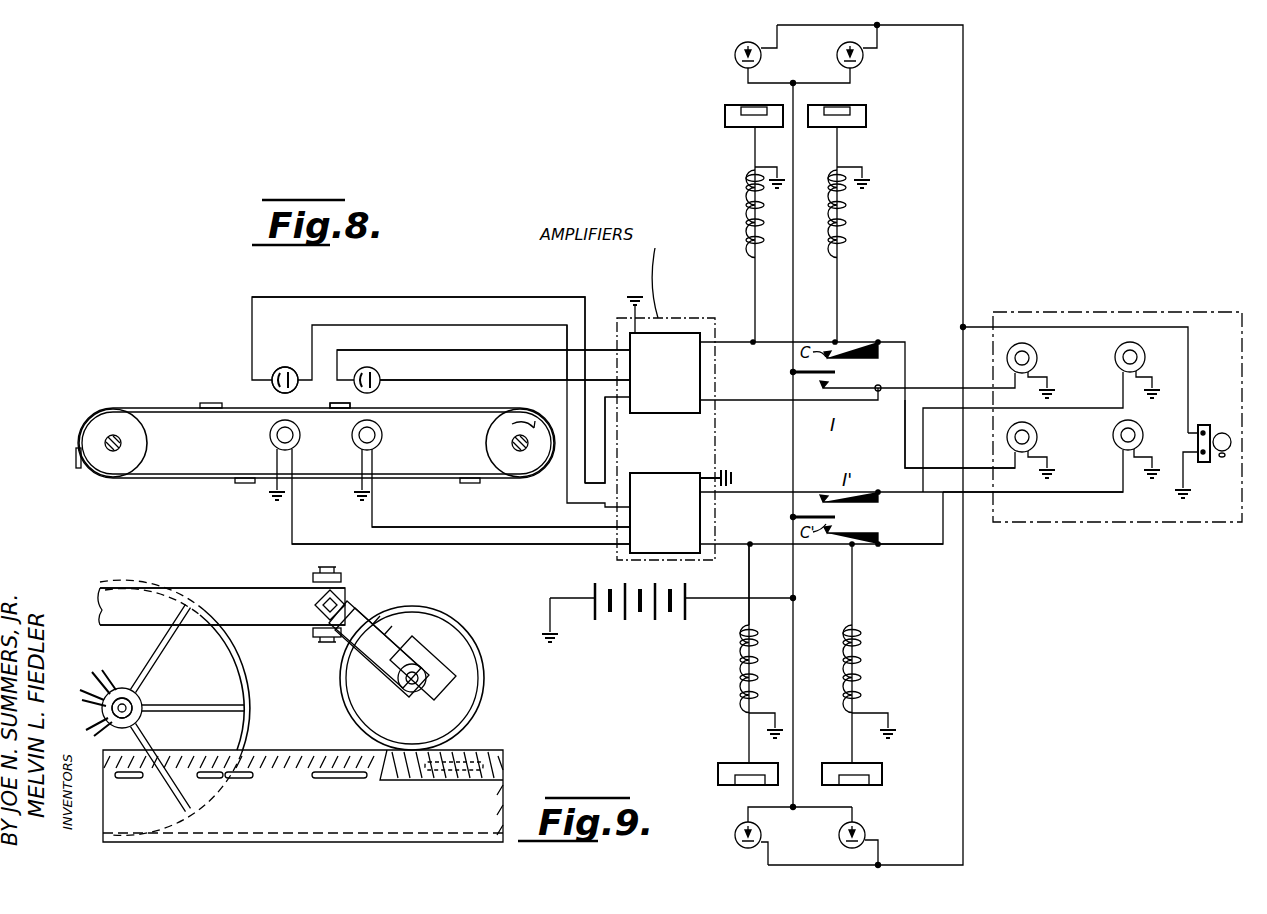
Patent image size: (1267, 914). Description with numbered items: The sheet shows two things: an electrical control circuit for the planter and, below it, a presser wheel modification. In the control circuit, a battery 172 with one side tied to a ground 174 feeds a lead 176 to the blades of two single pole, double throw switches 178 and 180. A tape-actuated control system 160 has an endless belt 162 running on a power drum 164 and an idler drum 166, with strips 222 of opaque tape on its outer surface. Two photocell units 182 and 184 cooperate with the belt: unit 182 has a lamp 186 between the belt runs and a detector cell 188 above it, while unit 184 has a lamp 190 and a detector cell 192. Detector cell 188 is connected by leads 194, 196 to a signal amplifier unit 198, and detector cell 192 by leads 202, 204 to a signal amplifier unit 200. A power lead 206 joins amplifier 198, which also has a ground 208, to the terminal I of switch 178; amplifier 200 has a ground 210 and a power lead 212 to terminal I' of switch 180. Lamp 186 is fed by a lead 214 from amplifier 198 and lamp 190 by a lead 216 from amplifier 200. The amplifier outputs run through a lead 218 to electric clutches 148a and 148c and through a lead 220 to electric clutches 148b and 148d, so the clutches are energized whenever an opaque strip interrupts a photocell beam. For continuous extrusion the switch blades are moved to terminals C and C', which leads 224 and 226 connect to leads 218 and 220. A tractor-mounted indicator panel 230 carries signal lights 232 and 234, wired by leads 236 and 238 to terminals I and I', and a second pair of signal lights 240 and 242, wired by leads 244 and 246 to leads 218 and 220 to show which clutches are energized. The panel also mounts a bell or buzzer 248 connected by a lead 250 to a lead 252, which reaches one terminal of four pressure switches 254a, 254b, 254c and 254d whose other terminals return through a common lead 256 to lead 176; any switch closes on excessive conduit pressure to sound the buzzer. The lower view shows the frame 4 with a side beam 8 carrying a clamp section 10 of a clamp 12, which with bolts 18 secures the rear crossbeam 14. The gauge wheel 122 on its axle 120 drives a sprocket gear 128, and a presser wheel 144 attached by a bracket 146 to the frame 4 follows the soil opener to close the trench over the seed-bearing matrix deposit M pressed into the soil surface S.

In FIG. 8, the pressure switch 254a is at (745, 48).
In FIG. 8, the pressure switch 254b is at (737, 839).
In FIG. 8, the pressure switch 254c is at (866, 51).
In FIG. 8, the pressure switch 254d is at (862, 831).
In FIG. 8, the common lead 256 is at (798, 92).
In FIG. 8, the lead 252 is at (964, 184).
In FIG. 8, the electric clutch 148a is at (736, 189).
In FIG. 8, the electric clutch 148b is at (738, 665).
In FIG. 8, the electric clutch 148c is at (871, 221).
In FIG. 8, the electric clutch 148d is at (875, 648).
In FIG. 8, the tape-actuated control system 160 is at (558, 286).
In FIG. 8, the ground 208 is at (635, 297).
In FIG. 8, the signal amplifier unit 198 is at (686, 340).
In FIG. 8, the signal amplifier unit 200 is at (668, 473).
In FIG. 8, the photocell unit 184 is at (290, 358).
In FIG. 8, the detector cell 192 is at (272, 384).
In FIG. 8, the detector cell 188 is at (381, 380).
In FIG. 8, the lamp 190 is at (270, 438).
In FIG. 8, the lamp 186 is at (382, 441).
In FIG. 8, the strips of opaque tape 222 is at (205, 403).
In FIG. 8, the photocell unit 182 is at (361, 406).
In FIG. 8, the endless tape or belt 162 is at (434, 410).
In FIG. 8, the power drum 164 is at (102, 432).
In FIG. 8, the idler drum 166 is at (520, 472).
In FIG. 8, the lead 196 is at (522, 358).
In FIG. 8, the lead 194 is at (526, 386).
In FIG. 8, the lead 202 is at (568, 406).
In FIG. 8, the lead 204 is at (587, 432).
In FIG. 8, the lead 214 is at (455, 527).
In FIG. 8, the lead 216 is at (328, 544).
In FIG. 8, the power lead 206 is at (757, 400).
In FIG. 8, the ground 210 is at (735, 472).
In FIG. 8, the power lead 212 is at (742, 492).
In FIG. 8, the lead 218 is at (862, 340).
In FIG. 8, the lead 220 is at (772, 544).
In FIG. 8, the lead 224 is at (850, 372).
In FIG. 8, the lead 226 is at (884, 544).
In FIG. 8, the lead 236 is at (928, 388).
In FIG. 8, the lead 238 is at (1083, 408).
In FIG. 8, the lead 244 is at (905, 445).
In FIG. 8, the lead 246 is at (1028, 492).
In FIG. 8, the single pole double throw switch 178 is at (813, 399).
In FIG. 8, the single pole double throw switch 180 is at (812, 500).
In FIG. 8, the indicator panel 230 is at (1200, 313).
In FIG. 8, the lead 250 is at (1095, 327).
In FIG. 8, the signal light 232 is at (1037, 356).
In FIG. 8, the signal light 234 is at (1146, 357).
In FIG. 8, the signal light 240 is at (1040, 438).
In FIG. 8, the signal light 242 is at (1140, 432).
In FIG. 8, the bell or buzzer 248 is at (1206, 425).
In FIG. 8, the battery 172 is at (641, 624).
In FIG. 8, the ground 174 is at (547, 645).
In FIG. 8, the lead 176 is at (771, 598).
In FIG. 9, the frame 4 is at (235, 584).
In FIG. 9, the side beam 8 is at (208, 600).
In FIG. 9, the clamp section 10 is at (320, 598).
In FIG. 9, the clamp 12 is at (347, 599).
In FIG. 9, the rear rectangular crossbeam 14 is at (317, 631).
In FIG. 9, the bolt 18 is at (338, 575).
In FIG. 9, the axle 120 is at (140, 700).
In FIG. 9, the ground-engaging gauge wheel 122 is at (252, 680).
In FIG. 9, the sprocket gear 128 is at (122, 688).
In FIG. 9, the presser wheel 144 is at (468, 625).
In FIG. 9, the bracket 146 is at (386, 612).
In FIG. 9, the seed-bearing matrix deposit M is at (262, 772).
In FIG. 9, the ground surface S is at (506, 752).